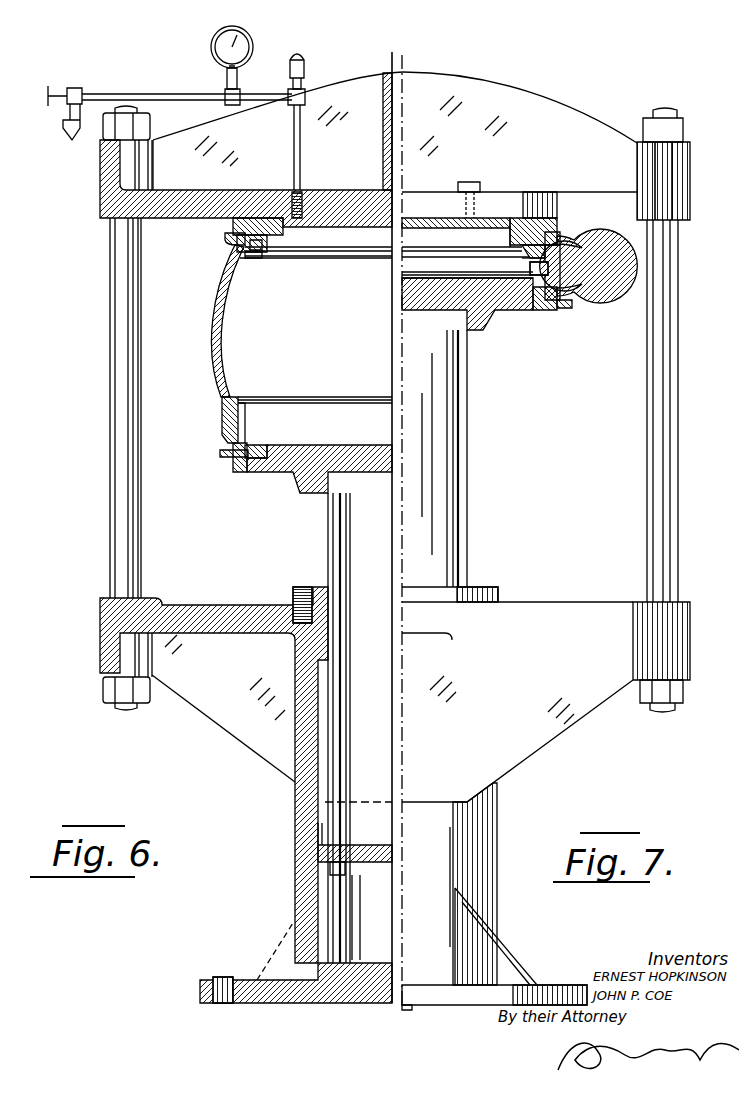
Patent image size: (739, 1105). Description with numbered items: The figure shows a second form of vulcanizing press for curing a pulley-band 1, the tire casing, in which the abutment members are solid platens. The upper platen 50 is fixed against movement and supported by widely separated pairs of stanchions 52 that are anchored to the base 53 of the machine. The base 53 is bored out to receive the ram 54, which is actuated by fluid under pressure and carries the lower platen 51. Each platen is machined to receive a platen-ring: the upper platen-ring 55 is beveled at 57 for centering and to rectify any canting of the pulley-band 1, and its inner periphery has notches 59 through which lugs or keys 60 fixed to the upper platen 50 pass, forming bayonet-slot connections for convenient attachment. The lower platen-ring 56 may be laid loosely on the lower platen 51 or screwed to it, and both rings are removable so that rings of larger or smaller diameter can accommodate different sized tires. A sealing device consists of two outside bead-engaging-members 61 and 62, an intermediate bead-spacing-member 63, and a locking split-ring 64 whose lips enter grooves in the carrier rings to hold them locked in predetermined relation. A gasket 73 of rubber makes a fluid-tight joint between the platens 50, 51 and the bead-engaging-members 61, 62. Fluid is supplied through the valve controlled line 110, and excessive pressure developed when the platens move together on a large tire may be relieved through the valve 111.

In FIG. 6, the pulley-band 1 is at (213, 317).
In FIG. 7, the pulley-band 1 is at (612, 299).
In FIG. 6, the upper platen 50 is at (328, 215).
In FIG. 7, the upper platen 50 is at (487, 222).
In FIG. 6, the lower platen 51 is at (290, 463).
In FIG. 7, the lower platen 51 is at (516, 294).
In FIG. 6, the stanchions 52 is at (118, 394).
In FIG. 7, the stanchions 52 is at (660, 374).
In FIG. 6, the base 53 is at (295, 800).
In FIG. 7, the base 53 is at (517, 798).
In FIG. 6, the ram 54 is at (350, 541).
In FIG. 7, the ram 54 is at (413, 438).
In FIG. 6, the upper platen-ring 55 is at (249, 252).
In FIG. 7, the upper platen-ring 55 is at (537, 256).
In FIG. 6, the lower platen-ring 56 is at (262, 445).
In FIG. 7, the lower platen-ring 56 is at (536, 311).
In FIG. 6, the bevel 57 is at (238, 258).
In FIG. 7, the bevel 57 is at (535, 258).
In FIG. 6, the notches 59 is at (256, 237).
In FIG. 6, the lugs or keys 60 is at (283, 240).
In FIG. 7, the lugs or keys 60 is at (522, 250).
In FIG. 6, the upper bead-engaging-member 61 is at (228, 233).
In FIG. 7, the upper bead-engaging-member 61 is at (558, 248).
In FIG. 6, the lower bead-engaging-member 62 is at (232, 456).
In FIG. 7, the lower bead-engaging-member 62 is at (566, 310).
In FIG. 6, the bead-spacing-member 63 is at (236, 396).
In FIG. 7, the bead-spacing-member 63 is at (562, 268).
In FIG. 6, the locking split-ring 64 is at (338, 420).
In FIG. 7, the locking split-ring 64 is at (452, 278).
In FIG. 6, the gasket 73 is at (248, 232).
In FIG. 7, the gasket 73 is at (560, 240).
In FIG. 6, the valve controlled line 110 is at (158, 94).
In FIG. 6, the valve 111 is at (297, 56).